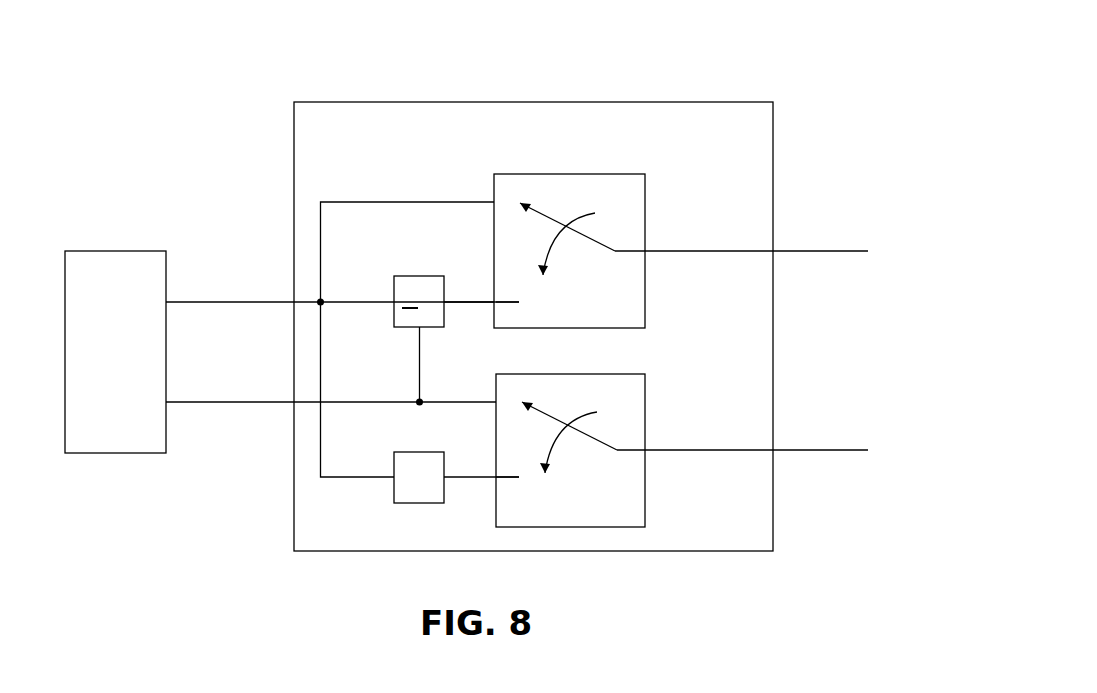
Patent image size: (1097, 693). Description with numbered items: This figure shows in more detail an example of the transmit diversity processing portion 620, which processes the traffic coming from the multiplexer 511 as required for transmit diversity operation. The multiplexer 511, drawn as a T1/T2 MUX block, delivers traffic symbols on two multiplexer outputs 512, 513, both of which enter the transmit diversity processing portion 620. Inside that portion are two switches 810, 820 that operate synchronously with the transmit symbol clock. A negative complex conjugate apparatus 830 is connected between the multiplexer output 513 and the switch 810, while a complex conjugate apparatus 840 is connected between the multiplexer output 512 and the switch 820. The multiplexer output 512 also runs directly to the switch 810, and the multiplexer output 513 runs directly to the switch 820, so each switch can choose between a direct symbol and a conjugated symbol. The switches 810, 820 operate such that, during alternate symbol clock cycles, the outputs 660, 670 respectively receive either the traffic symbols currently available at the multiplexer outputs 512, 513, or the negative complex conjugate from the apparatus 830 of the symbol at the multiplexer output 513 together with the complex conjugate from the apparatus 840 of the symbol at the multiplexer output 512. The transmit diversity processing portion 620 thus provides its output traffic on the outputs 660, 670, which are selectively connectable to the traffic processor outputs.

The multiplexer 511 is at (115, 251).
The multiplexer output 512 is at (232, 302).
The multiplexer output 513 is at (232, 402).
The transmit diversity processing portion 620 is at (530, 102).
The switch 810 is at (570, 174).
The switch 820 is at (645, 399).
The negative complex conjugate apparatus 830 is at (418, 276).
The complex conjugate apparatus 840 is at (418, 503).
The output 660 is at (833, 251).
The output 670 is at (833, 450).